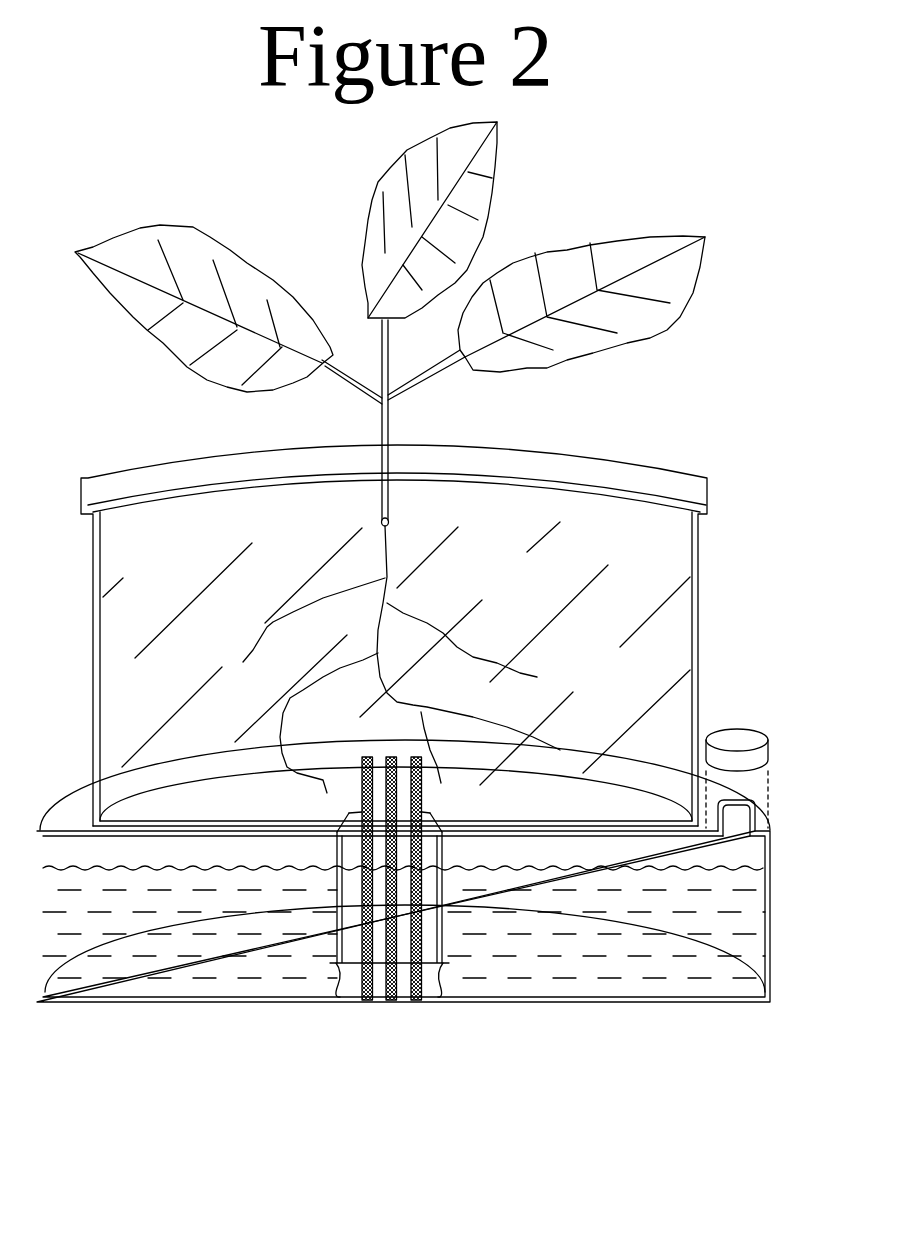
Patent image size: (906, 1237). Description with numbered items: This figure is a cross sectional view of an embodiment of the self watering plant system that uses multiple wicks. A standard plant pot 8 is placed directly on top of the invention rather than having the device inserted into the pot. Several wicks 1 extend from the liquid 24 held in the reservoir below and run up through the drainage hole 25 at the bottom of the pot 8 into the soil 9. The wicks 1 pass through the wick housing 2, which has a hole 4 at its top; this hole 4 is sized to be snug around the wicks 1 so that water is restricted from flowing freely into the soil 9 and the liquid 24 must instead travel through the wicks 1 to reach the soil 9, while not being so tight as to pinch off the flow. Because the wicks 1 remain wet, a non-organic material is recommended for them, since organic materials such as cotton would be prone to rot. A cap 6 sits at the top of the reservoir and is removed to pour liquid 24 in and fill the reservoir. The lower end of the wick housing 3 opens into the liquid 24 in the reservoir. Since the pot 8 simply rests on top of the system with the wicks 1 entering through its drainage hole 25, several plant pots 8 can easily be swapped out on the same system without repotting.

The wick 1 is at (420, 1015).
The wick housing 2 is at (353, 858).
The lower end of wick conduit 3 is at (395, 1005).
The hole 4 is at (443, 835).
The cap 6 is at (770, 733).
The plant pot 8 is at (702, 555).
The soil 9 is at (610, 553).
The liquid 24 is at (735, 920).
The drainage hole 25 is at (357, 812).